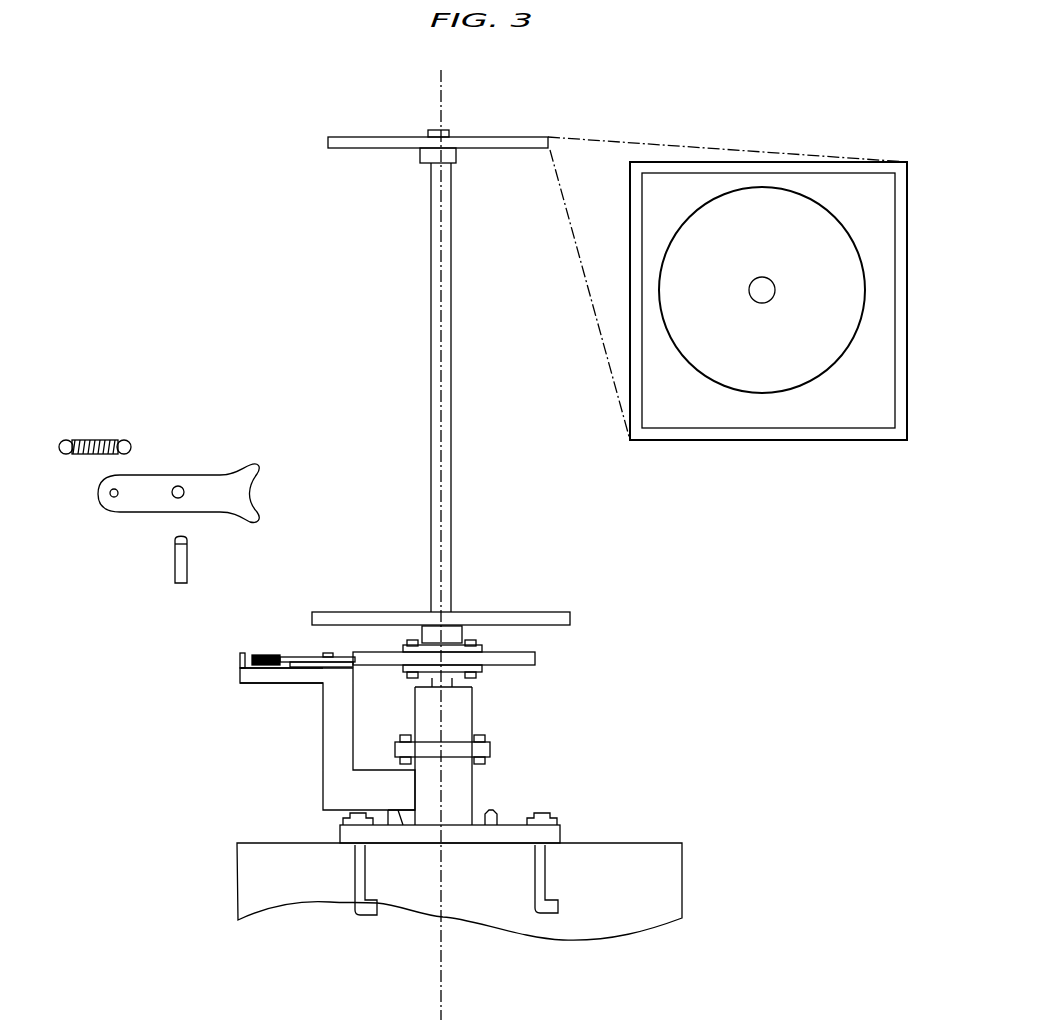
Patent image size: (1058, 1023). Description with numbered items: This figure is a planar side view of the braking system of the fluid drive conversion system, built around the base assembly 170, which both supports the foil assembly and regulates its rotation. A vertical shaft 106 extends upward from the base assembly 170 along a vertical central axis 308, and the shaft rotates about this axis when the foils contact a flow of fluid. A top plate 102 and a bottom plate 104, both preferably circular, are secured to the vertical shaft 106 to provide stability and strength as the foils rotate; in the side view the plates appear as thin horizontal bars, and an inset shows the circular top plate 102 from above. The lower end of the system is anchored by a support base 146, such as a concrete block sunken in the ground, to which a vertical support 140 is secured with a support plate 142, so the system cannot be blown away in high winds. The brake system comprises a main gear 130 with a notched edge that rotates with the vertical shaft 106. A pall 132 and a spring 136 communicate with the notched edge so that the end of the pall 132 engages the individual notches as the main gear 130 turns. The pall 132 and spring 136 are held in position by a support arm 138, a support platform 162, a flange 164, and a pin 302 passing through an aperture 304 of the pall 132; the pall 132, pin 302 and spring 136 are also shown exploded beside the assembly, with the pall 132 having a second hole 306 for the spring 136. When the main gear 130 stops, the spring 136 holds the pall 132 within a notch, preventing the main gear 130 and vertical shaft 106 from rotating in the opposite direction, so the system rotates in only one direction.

The top plate 102 is at (505, 128).
The bottom plate 104 is at (568, 612).
The vertical shaft 106 is at (452, 470).
The main gear 130 is at (538, 657).
The pall 132 is at (342, 655).
The spring 136 is at (266, 655).
The support arm 138 is at (323, 745).
The vertical support 140 is at (472, 790).
The support plate 142 is at (489, 835).
The support base 146 is at (654, 883).
The support platform 162 is at (265, 686).
The flange 164 is at (238, 660).
The base assembly 170 is at (714, 91).
The pin 302 is at (188, 565).
The aperture 304 is at (180, 486).
The spring hole 306 is at (112, 497).
The vertical central axis 308 is at (441, 92).